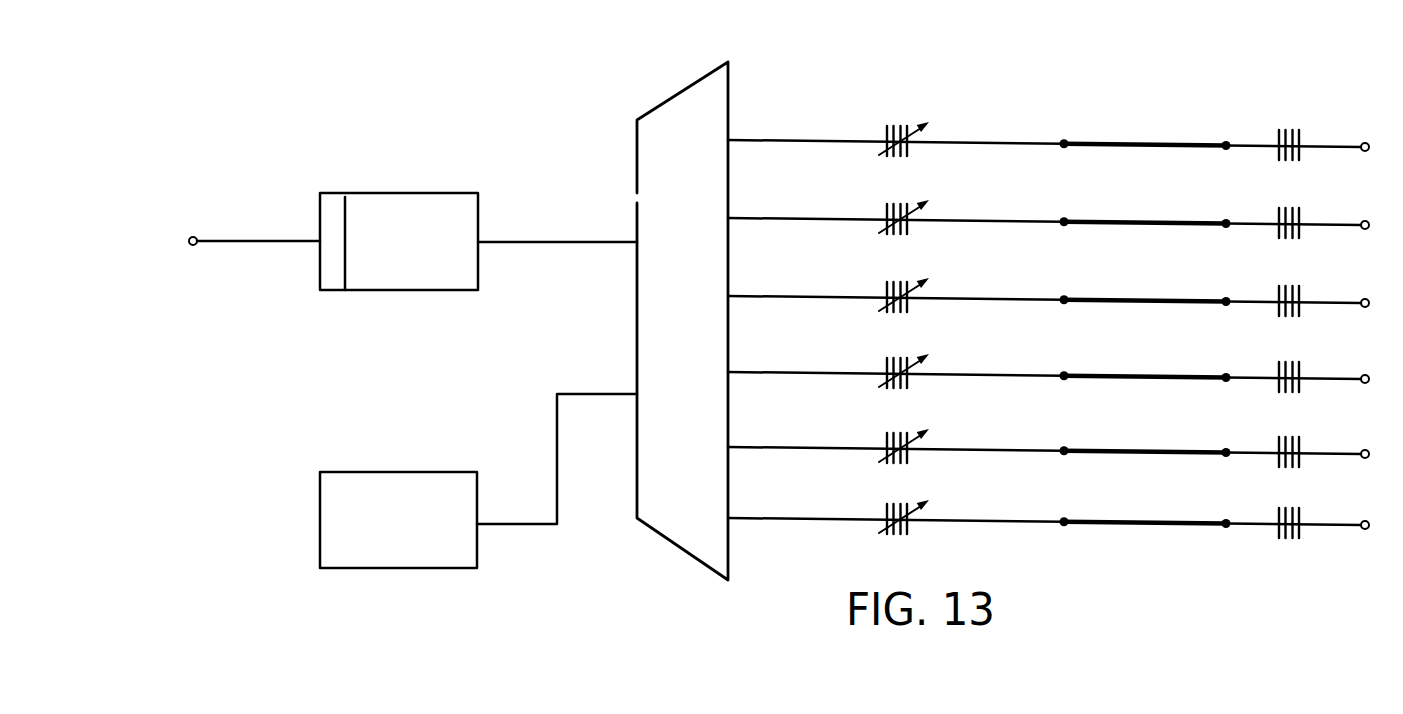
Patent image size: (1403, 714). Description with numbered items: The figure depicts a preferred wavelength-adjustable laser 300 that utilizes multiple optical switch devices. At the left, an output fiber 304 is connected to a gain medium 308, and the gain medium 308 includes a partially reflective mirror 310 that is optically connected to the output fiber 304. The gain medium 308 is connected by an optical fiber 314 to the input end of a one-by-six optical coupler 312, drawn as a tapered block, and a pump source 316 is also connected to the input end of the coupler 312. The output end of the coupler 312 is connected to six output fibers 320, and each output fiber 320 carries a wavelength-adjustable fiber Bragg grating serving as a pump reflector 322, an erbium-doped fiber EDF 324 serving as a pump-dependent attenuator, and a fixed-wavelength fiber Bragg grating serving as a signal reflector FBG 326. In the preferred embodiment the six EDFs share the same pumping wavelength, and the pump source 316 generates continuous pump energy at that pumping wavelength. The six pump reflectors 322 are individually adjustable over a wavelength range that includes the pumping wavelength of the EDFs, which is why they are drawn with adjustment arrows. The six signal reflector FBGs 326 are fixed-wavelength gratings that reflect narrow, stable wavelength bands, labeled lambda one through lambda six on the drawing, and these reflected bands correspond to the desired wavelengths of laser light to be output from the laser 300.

The wavelength-adjustable laser 300 is at (1226, 38).
The output fiber 304 is at (236, 241).
The gain medium 308 is at (430, 170).
The partially reflective mirror 310 is at (350, 170).
The 1×6 optical coupler 312 is at (676, 94).
The optical fiber 314 is at (582, 229).
The pump source 316 is at (360, 457).
The output fibers 320 is at (1342, 133).
The pump reflector 322 is at (912, 100).
The EDF 324 is at (1130, 130).
The signal reflector FBG 326 is at (1304, 110).